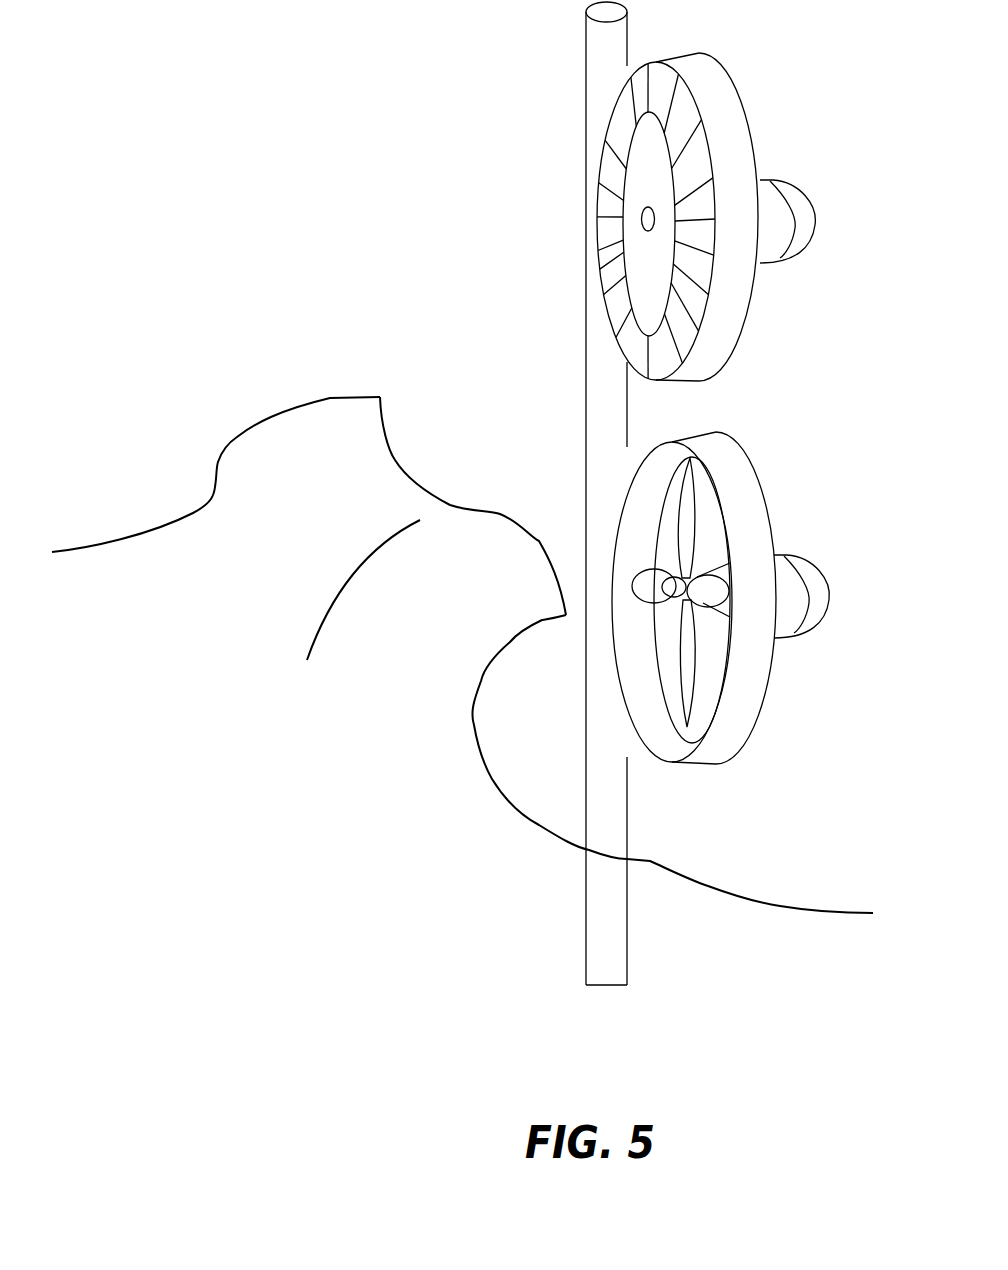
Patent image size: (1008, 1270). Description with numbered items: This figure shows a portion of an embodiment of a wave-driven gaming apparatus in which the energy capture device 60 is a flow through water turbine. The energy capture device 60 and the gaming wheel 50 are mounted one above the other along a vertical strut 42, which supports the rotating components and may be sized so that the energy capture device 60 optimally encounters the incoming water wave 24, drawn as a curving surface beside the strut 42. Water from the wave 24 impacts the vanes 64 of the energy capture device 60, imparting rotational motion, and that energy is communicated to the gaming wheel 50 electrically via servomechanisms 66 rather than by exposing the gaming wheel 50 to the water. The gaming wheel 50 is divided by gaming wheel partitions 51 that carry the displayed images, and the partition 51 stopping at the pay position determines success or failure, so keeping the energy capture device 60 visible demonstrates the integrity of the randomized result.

The water wave 24 is at (340, 393).
The strut 42 is at (598, 45).
The gaming wheel 50 is at (597, 227).
The gaming wheel partition 51 is at (620, 118).
The energy capture device 60 is at (705, 764).
The vanes 64 is at (688, 475).
The servomechanisms 66 is at (802, 240).